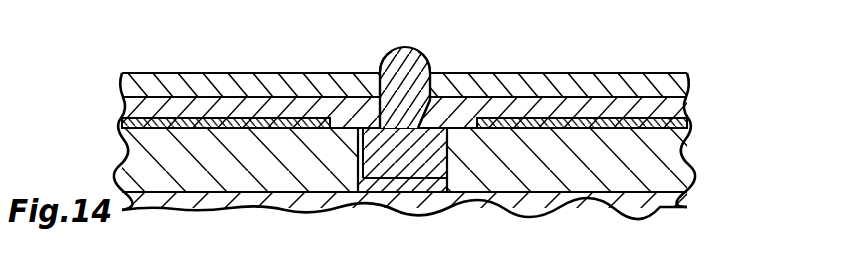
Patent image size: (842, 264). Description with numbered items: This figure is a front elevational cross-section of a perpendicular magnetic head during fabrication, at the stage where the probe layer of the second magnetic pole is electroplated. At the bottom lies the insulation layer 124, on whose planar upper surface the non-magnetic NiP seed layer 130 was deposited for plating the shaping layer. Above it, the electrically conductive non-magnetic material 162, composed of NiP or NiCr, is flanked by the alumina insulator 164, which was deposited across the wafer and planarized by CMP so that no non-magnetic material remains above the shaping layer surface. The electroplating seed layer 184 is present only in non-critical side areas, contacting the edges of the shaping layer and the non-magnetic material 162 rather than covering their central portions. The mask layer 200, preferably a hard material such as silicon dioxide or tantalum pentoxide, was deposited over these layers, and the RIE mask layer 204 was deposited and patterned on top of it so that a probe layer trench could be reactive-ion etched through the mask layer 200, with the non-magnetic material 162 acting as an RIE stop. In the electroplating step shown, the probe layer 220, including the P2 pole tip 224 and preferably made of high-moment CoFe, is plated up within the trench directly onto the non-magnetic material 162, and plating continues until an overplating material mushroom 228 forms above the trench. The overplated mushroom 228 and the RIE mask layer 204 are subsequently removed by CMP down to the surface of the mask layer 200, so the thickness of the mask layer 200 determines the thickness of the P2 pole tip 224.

The RIE mask layer 204 is at (206, 88).
The electroplating seed layer 184 is at (257, 115).
The P2 pole tip 224 is at (381, 70).
The overplating material mushroom 228 is at (404, 112).
The probe layer 220 is at (431, 70).
The mask layer 200 is at (505, 106).
The insulator 164 is at (134, 160).
The insulation layer 124 is at (676, 200).
The non-magnetic material 162 is at (393, 170).
The seed layer 130 is at (406, 188).